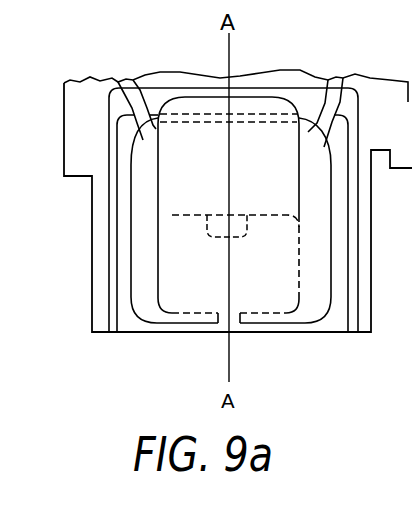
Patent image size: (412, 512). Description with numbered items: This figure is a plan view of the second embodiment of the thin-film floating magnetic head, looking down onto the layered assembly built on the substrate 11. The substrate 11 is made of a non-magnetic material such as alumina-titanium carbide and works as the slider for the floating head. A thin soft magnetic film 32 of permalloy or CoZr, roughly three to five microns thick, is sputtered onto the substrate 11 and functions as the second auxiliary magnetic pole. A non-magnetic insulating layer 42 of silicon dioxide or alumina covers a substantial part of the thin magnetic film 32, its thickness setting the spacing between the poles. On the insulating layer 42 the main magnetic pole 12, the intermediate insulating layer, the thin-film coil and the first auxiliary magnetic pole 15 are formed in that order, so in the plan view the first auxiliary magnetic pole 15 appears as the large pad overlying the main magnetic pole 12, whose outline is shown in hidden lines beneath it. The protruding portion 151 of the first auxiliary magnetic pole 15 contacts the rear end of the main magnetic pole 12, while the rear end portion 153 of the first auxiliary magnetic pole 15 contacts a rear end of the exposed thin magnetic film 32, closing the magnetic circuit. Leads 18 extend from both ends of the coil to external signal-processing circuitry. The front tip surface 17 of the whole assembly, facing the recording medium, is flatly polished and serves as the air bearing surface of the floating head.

The substrate 11 is at (365, 202).
The main magnetic pole 12 is at (172, 215).
The first auxiliary magnetic pole 15 is at (175, 165).
The front tip surface 17 is at (329, 333).
The leads 18 is at (139, 103).
The thin soft magnetic film 32 is at (353, 144).
The non-magnetic insulating layer 42 is at (337, 267).
The protruding portion 151 is at (215, 228).
The rear end portion 153 is at (266, 106).